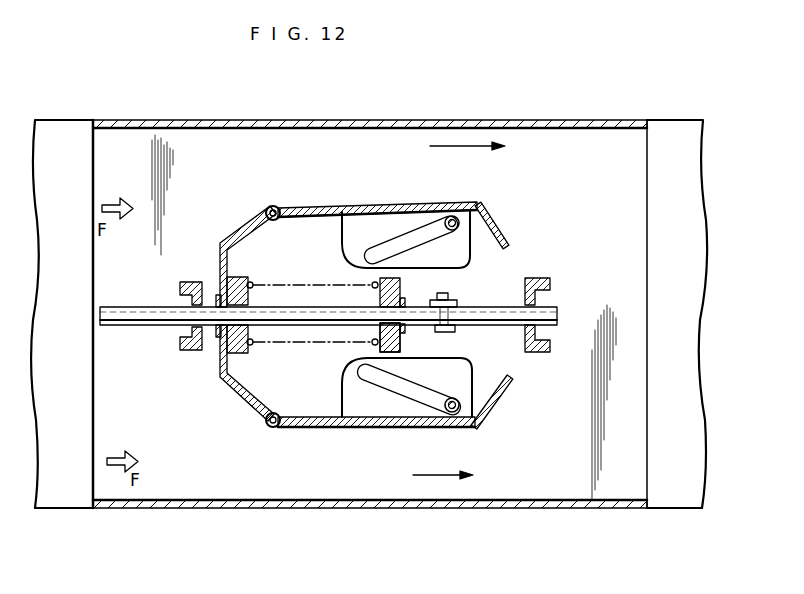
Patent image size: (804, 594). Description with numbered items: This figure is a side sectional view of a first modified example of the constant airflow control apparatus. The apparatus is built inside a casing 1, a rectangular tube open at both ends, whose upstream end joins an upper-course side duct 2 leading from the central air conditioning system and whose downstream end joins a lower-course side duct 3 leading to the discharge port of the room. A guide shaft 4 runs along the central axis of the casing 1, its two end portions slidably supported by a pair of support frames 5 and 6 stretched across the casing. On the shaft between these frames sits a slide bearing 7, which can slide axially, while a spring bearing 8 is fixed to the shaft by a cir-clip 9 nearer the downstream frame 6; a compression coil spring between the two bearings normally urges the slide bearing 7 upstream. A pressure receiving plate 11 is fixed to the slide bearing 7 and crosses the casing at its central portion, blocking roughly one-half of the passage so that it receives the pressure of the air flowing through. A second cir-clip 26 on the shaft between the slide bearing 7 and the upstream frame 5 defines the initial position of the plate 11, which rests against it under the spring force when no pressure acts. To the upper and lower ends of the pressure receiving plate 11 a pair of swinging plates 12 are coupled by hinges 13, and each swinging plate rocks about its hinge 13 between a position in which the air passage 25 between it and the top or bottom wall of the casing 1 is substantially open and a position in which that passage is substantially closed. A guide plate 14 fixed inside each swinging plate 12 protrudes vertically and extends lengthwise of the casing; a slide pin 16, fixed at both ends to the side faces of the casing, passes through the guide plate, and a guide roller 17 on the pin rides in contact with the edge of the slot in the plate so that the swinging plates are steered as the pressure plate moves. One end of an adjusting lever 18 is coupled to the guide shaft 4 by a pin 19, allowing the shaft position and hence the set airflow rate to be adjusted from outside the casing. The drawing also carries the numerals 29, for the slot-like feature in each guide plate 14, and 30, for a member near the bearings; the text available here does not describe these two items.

The casing 1 is at (370, 312).
The upper-course side duct 2 is at (67, 120).
The lower-course side duct 3 is at (667, 124).
The guide shaft 4 is at (143, 326).
The support frame 5 is at (188, 282).
The support frame 6 is at (538, 280).
The slide bearing 7 is at (240, 278).
The spring bearing 8 is at (404, 342).
The cir-clip 9 is at (402, 298).
The pressure receiving plate 11 is at (238, 232).
The swinging plate 12 is at (336, 206).
The hinge 13 is at (270, 207).
The guide plate 14 is at (398, 222).
The slide pin 16 is at (496, 232).
The guide roller 17 is at (478, 208).
The adjusting lever 18 is at (464, 302).
The pin 19 is at (445, 300).
The air passage 25 is at (378, 143).
The cir-clip 26 is at (214, 340).
The cam slot 29 is at (430, 232).
The rotor body 30 is at (300, 284).